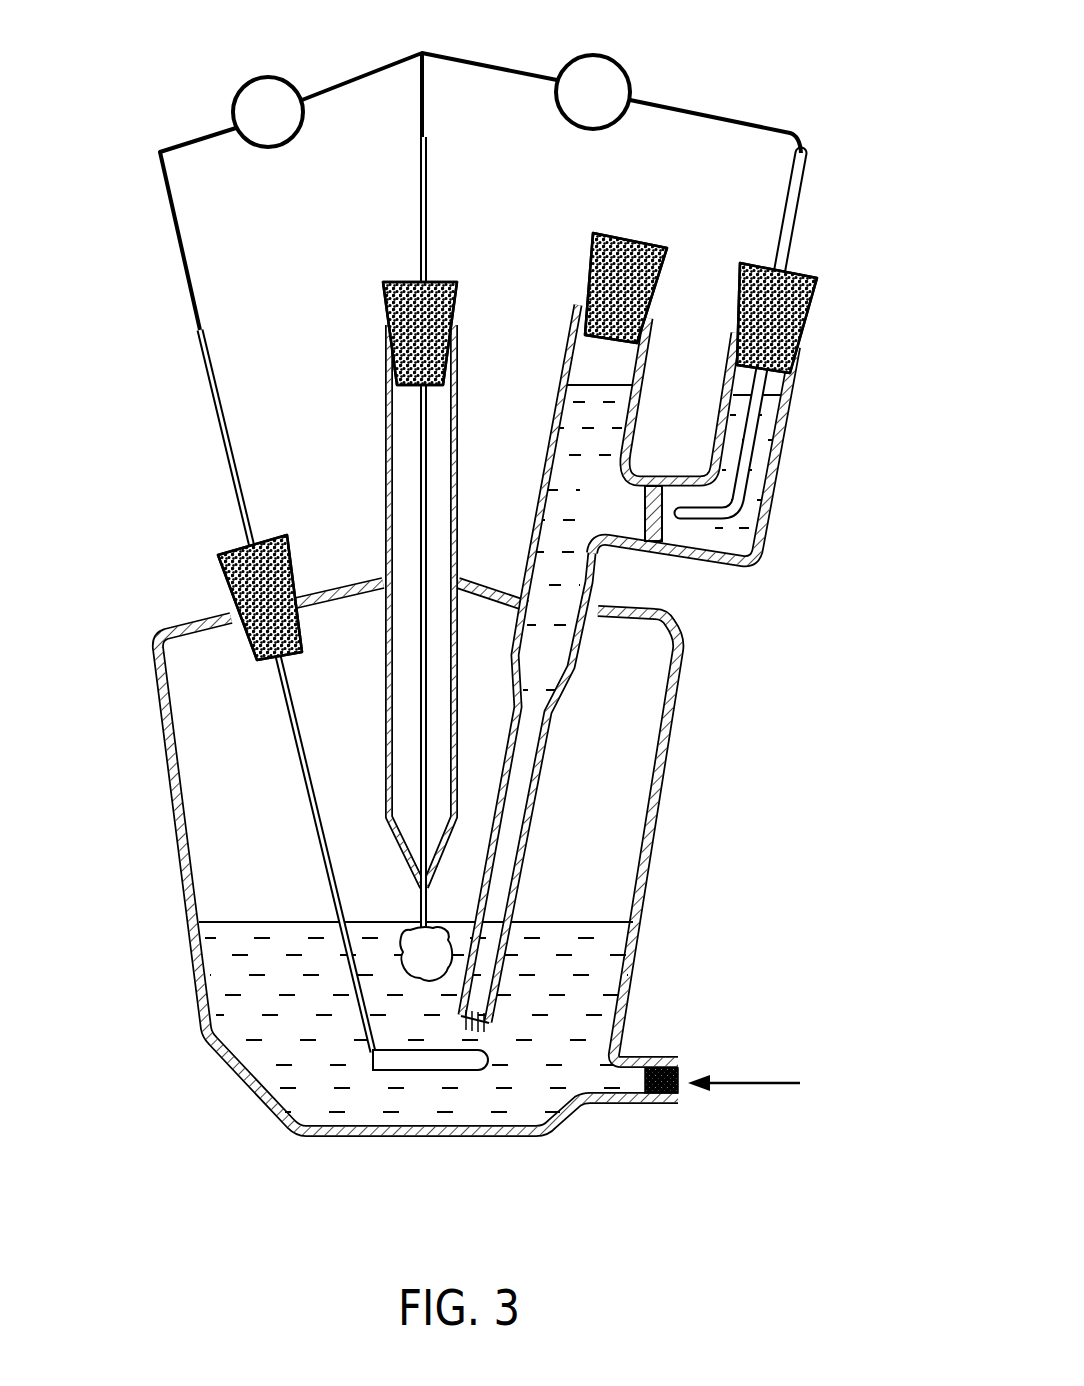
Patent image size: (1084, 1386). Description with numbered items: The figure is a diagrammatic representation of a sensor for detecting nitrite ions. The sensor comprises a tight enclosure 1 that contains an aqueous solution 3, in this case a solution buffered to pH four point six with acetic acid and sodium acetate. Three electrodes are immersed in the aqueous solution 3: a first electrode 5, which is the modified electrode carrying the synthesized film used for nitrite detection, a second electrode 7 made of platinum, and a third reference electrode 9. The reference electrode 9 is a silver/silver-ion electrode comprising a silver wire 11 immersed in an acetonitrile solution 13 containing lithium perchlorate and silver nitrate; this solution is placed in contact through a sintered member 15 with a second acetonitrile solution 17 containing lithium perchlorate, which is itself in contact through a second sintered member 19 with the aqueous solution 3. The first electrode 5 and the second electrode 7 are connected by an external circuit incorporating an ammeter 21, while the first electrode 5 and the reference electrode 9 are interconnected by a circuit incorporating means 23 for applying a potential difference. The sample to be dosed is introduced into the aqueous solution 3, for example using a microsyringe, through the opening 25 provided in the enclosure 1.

The tight enclosure 1 is at (175, 765).
The aqueous solution 3 is at (235, 995).
The first electrode 5 is at (423, 955).
The second electrode 7 is at (410, 1062).
The reference electrode 9 is at (797, 538).
The silver wire 11 is at (747, 423).
The acetonitrile solution 13 is at (753, 497).
The sintered member 15 is at (655, 488).
The acetonitrile solution 17 is at (523, 767).
The second sintered member 19 is at (487, 1023).
The ammeter 21 is at (269, 85).
The means for applying a potential difference 23 is at (600, 65).
The opening 25 is at (680, 1082).